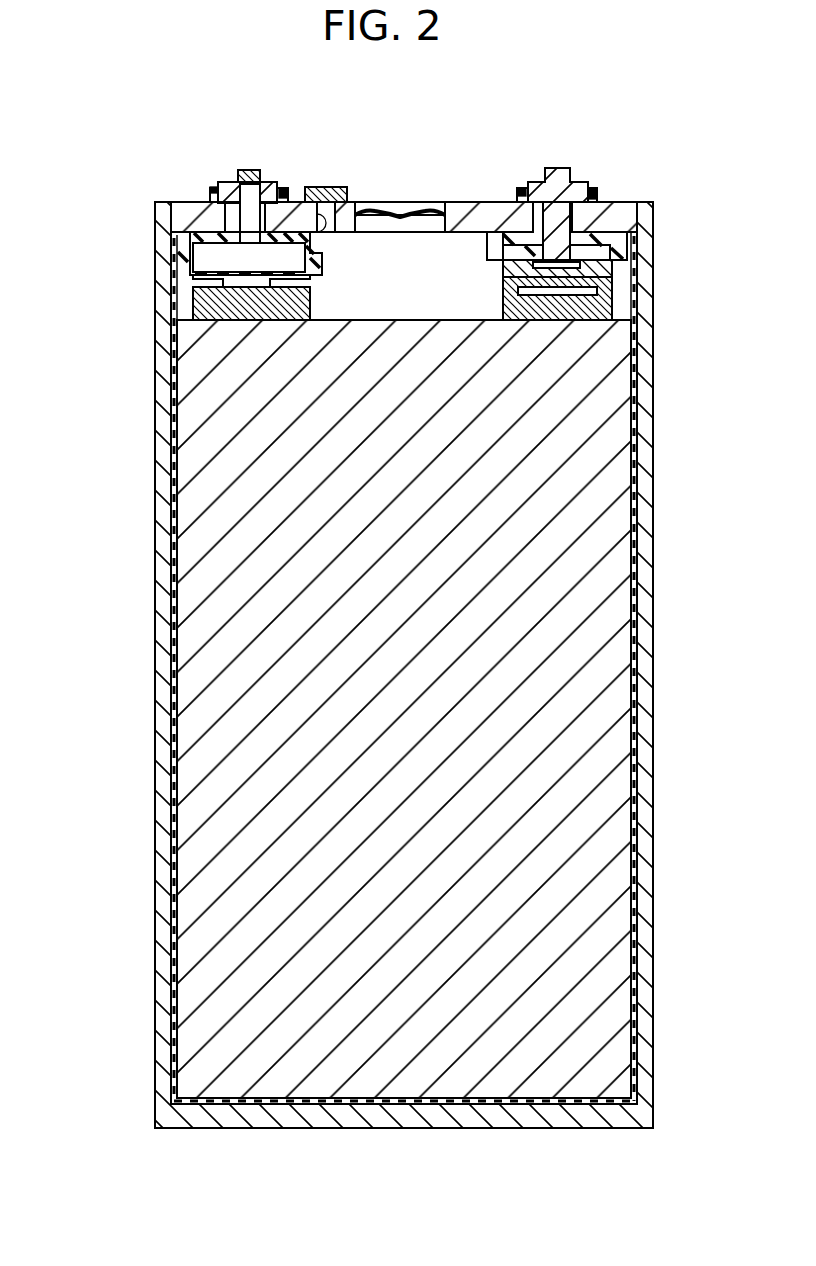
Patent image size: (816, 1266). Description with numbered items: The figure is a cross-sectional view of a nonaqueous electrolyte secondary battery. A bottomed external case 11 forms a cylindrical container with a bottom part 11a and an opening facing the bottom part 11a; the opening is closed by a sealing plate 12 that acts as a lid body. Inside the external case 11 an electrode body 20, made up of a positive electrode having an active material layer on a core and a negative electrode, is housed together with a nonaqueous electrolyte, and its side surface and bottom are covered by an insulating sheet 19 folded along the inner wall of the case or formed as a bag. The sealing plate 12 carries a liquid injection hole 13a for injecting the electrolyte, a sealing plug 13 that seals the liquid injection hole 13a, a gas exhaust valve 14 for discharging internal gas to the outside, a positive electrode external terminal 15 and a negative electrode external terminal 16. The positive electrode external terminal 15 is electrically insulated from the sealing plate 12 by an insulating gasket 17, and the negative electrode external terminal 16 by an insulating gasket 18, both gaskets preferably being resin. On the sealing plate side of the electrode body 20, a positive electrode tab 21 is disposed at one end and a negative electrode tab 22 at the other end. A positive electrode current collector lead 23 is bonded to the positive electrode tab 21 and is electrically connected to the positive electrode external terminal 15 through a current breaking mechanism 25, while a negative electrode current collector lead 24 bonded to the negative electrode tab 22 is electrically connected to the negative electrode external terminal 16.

The external case 11 is at (167, 718).
The bottom part 11a is at (413, 1120).
The sealing plate 12 is at (487, 215).
The sealing plug 13 is at (330, 190).
The liquid injection hole 13a is at (325, 210).
The gas exhaust valve 14 is at (430, 205).
The positive electrode external terminal 15 is at (245, 168).
The negative electrode external terminal 16 is at (553, 172).
The insulating gasket 17 is at (212, 193).
The insulating gasket 18 is at (598, 190).
The insulating sheet 19 is at (170, 1038).
The electrode body 20 is at (220, 612).
The positive electrode tab 21 is at (198, 307).
The negative electrode tab 22 is at (600, 308).
The positive electrode current collector lead 23 is at (203, 282).
The negative electrode current collector lead 24 is at (593, 268).
The current breaking mechanism 25 is at (213, 257).